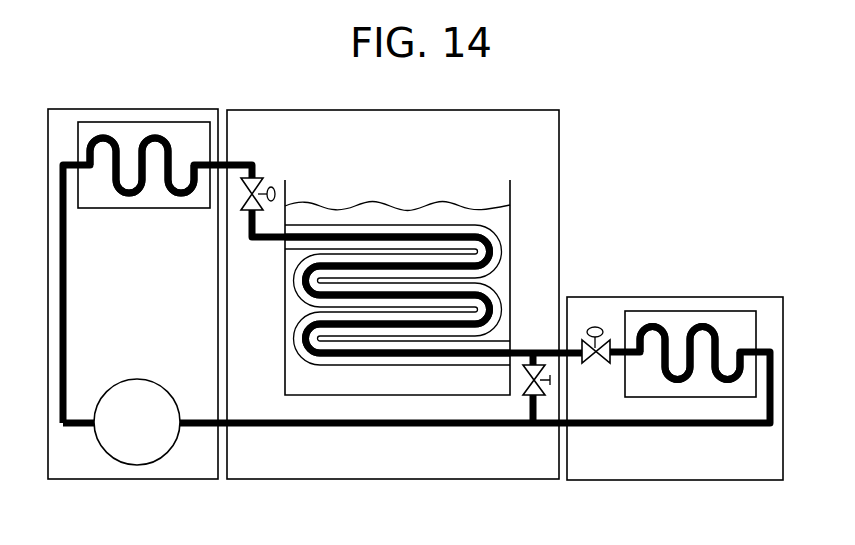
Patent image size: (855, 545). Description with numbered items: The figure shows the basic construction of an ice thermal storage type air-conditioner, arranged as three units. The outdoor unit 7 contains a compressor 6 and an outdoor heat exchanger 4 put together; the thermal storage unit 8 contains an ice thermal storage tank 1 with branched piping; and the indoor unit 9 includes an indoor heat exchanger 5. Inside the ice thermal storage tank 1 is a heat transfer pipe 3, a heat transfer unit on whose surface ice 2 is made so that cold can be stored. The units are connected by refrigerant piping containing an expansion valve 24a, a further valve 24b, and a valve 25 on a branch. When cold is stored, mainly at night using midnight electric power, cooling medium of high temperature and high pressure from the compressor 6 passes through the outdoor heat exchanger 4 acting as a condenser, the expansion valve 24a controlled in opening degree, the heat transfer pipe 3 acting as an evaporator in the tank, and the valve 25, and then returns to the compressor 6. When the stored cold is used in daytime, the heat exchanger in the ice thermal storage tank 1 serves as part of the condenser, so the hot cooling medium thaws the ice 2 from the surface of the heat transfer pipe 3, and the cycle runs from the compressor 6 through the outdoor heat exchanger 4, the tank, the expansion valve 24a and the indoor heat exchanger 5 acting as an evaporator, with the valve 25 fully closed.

The ice thermal storage tank 1 is at (510, 180).
The ice 2 is at (447, 222).
The heat transfer pipe 3 is at (390, 235).
The outdoor heat exchanger 4 is at (143, 208).
The indoor heat exchanger 5 is at (690, 311).
The compressor 6 is at (157, 385).
The outdoor unit 7 is at (143, 479).
The thermal storage unit 8 is at (393, 480).
The indoor unit 9 is at (681, 480).
The expansion valve 24a is at (262, 180).
The expansion valve 24b is at (597, 363).
The valve 25 is at (527, 395).